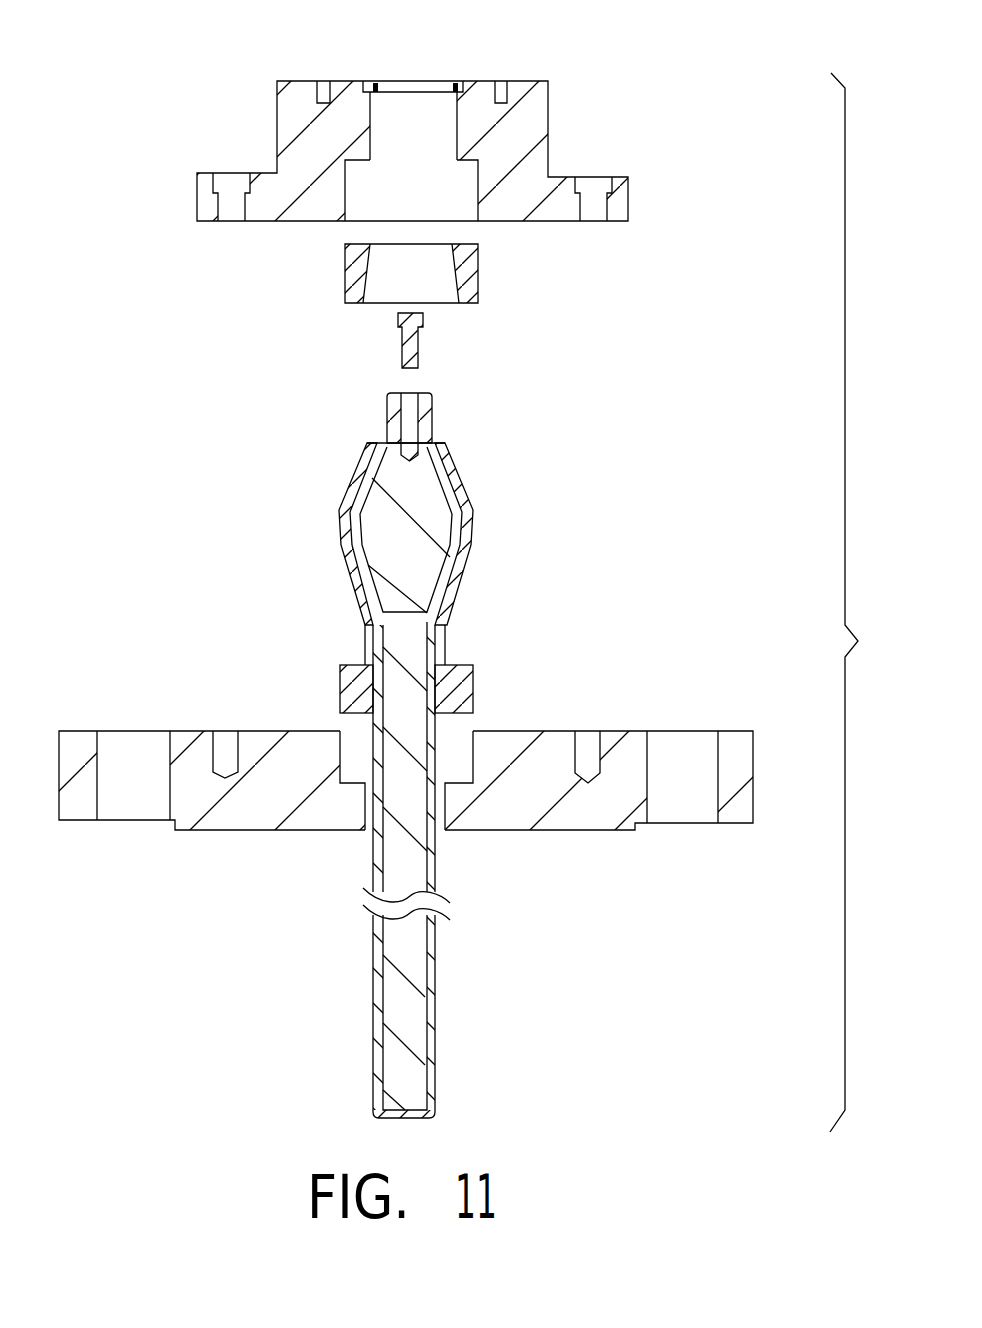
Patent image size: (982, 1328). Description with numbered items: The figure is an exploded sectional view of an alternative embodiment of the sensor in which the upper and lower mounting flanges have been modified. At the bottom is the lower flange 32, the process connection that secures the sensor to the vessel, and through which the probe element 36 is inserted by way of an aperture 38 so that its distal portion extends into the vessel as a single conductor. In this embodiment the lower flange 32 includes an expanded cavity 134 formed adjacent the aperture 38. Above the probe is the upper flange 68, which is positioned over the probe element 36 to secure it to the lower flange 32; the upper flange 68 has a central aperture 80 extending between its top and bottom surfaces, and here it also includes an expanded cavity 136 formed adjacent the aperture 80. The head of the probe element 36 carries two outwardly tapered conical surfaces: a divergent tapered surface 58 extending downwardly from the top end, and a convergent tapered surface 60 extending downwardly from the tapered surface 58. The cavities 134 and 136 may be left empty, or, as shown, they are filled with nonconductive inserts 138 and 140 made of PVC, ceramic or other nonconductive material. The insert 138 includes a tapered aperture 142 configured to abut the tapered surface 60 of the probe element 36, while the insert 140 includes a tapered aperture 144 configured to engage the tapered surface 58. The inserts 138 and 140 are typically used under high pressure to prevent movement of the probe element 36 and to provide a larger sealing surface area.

The lower flange 32 is at (739, 692).
The probe element 36 is at (504, 466).
The aperture 38 is at (440, 817).
The tapered surface 58 is at (378, 482).
The tapered surface 60 is at (365, 562).
The upper flange 68 is at (681, 147).
The central aperture 80 is at (456, 117).
The expanded cavity 134 is at (465, 732).
The expanded cavity 136 is at (478, 192).
The insert 138 is at (343, 665).
The insert 140 is at (345, 277).
The tapered aperture 142 is at (448, 664).
The tapered aperture 144 is at (452, 285).